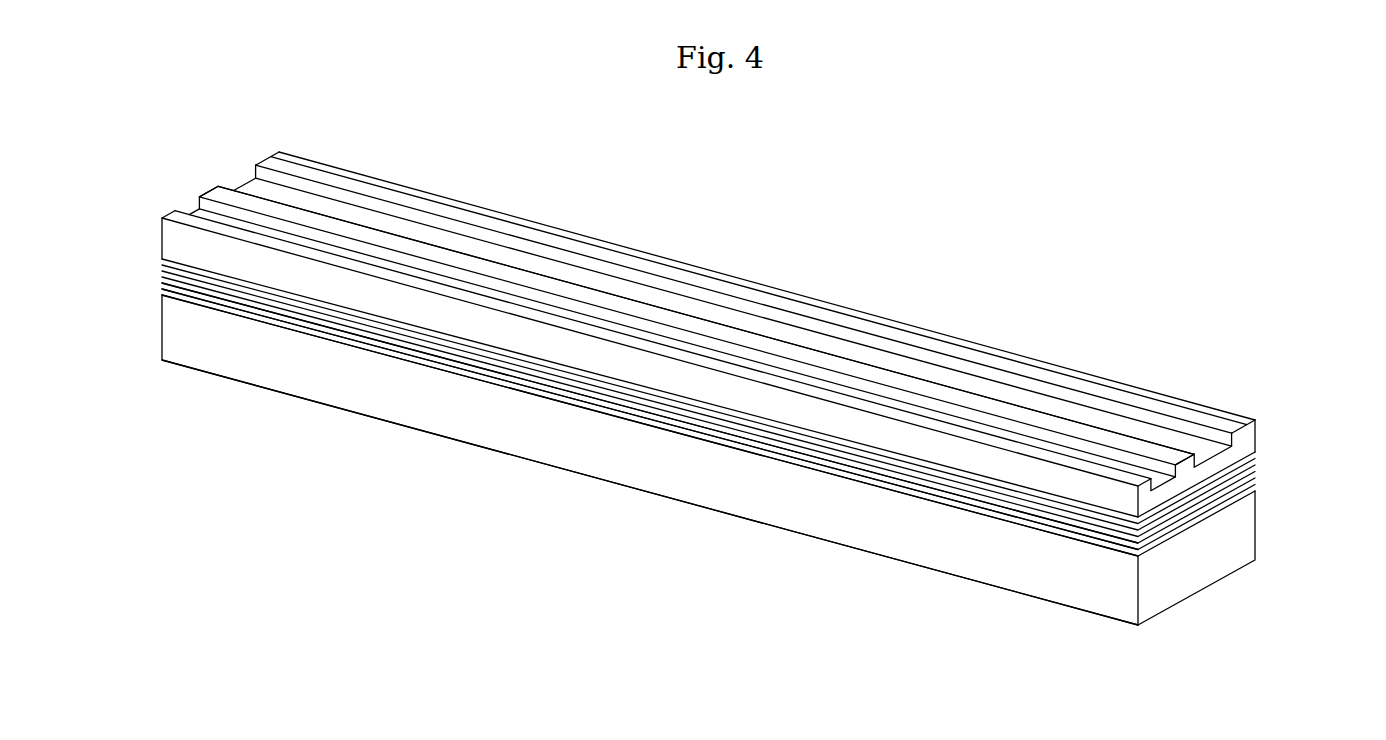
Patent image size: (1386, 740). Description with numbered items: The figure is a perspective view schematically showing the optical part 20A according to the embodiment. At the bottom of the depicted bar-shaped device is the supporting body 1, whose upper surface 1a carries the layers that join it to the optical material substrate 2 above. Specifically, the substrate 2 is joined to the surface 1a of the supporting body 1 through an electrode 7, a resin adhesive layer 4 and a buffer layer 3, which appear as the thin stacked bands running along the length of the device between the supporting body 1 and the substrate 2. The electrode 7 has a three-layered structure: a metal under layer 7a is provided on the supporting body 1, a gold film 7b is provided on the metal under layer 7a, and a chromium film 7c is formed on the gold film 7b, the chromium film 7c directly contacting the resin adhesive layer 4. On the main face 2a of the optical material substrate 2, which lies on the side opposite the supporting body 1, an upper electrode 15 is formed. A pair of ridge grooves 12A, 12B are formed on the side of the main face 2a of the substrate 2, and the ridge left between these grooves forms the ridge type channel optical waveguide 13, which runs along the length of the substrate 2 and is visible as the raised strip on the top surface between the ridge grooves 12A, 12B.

The supporting body 1 is at (1250, 538).
The surface of supporting body 1a is at (893, 482).
The optical material substrate 2 is at (1250, 444).
The main face of optical material substrate 2a is at (1202, 406).
The buffer layer 3 is at (162, 259).
The resin adhesive layer 4 is at (162, 265).
The electrode 7 is at (157, 271).
The metal under layer 7a is at (478, 382).
The gold film 7b is at (522, 390).
The chromium film 7c is at (600, 398).
The ridge groove 12A is at (755, 345).
The ridge groove 12B is at (860, 330).
The channel type optical waveguide 13 is at (640, 295).
The upper electrode 15 is at (1096, 393).
The optical part 20A is at (1294, 358).